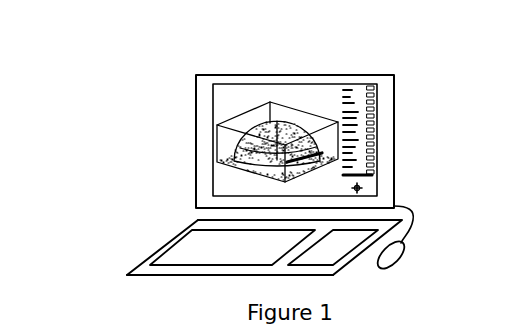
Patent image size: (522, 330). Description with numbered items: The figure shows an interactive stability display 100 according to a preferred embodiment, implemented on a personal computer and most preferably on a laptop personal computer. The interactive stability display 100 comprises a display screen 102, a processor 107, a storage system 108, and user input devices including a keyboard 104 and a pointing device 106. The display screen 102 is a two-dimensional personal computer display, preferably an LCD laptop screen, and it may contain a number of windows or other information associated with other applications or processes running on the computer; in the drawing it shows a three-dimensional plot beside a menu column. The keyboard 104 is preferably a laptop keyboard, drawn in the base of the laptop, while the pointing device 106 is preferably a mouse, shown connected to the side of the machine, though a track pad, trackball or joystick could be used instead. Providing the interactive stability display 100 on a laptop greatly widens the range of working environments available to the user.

The interactive stability display 100 is at (134, 114).
The display screen 102 is at (304, 80).
The keyboard 104 is at (192, 222).
The pointing device 106 is at (404, 243).
The processor 107 is at (141, 246).
The storage system 108 is at (118, 274).